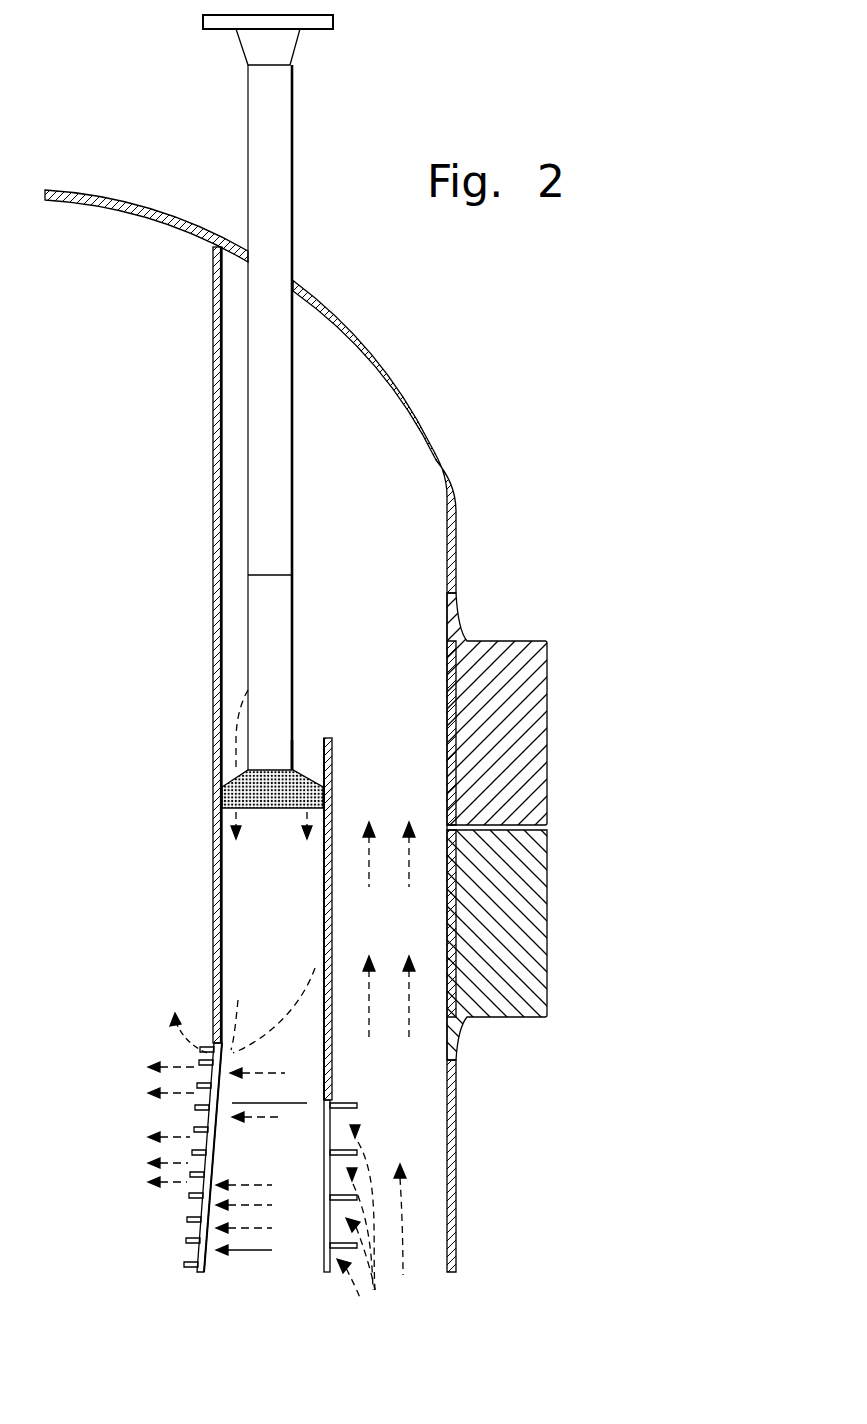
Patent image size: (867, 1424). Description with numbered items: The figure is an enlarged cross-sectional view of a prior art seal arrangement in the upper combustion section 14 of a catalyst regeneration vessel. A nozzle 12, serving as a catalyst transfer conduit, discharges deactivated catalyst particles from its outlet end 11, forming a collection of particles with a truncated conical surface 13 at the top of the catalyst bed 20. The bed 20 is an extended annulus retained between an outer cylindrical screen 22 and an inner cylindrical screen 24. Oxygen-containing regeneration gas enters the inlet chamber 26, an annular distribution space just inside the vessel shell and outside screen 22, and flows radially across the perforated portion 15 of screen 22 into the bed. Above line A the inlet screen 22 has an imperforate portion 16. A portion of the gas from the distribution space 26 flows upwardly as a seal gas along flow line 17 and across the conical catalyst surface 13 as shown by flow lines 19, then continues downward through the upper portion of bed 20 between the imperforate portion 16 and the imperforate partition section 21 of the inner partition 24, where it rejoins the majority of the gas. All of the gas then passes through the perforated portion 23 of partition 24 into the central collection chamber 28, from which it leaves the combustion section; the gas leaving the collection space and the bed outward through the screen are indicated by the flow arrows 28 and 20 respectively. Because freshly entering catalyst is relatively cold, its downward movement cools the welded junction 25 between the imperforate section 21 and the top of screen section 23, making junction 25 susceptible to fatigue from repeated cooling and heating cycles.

The outlet end 11 is at (295, 770).
The nozzle 12 is at (293, 100).
The truncated conical surface 13 is at (299, 776).
The upper combustion section 14 is at (458, 1181).
The perforated portion 15 is at (324, 1200).
The imperforate portion 16 is at (333, 849).
The flow line 17 is at (369, 887).
The flow lines 19 is at (306, 768).
The catalyst bed 20 is at (297, 1151).
The imperforate partition section 21 is at (213, 913).
The cylindrical screen 22 is at (357, 1112).
The perforated portion 23 is at (193, 1223).
The cylindrical screen 24 is at (158, 1216).
The junction 25 is at (213, 1047).
The inlet chamber 26 is at (388, 1244).
The central collection chamber 28 is at (130, 1175).
The line A is at (292, 1103).